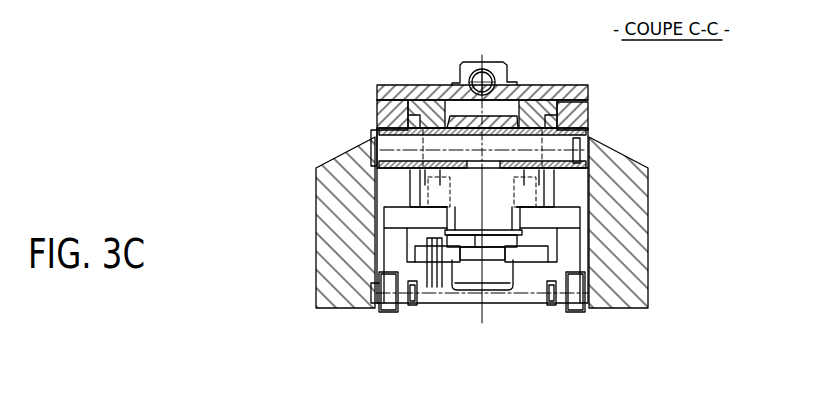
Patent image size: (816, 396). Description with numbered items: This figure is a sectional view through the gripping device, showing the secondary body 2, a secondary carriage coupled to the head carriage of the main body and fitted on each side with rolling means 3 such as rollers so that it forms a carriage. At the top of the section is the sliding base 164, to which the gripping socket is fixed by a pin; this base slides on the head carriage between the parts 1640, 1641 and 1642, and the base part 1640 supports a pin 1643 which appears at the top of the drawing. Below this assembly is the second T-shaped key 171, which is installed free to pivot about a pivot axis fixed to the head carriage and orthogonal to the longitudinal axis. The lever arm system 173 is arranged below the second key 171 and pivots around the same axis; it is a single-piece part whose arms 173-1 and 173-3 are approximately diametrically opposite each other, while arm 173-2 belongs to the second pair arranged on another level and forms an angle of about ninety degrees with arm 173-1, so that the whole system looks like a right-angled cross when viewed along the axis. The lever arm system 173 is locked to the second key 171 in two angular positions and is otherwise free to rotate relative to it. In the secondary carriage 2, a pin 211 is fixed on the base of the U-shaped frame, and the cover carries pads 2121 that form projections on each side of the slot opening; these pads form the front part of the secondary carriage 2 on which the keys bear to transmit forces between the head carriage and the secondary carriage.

The secondary body 2 is at (568, 240).
The rolling means 3 is at (578, 305).
The base 164 is at (415, 110).
The second T-shaped key 171 is at (462, 190).
The lever arm system 173 is at (463, 295).
The arm 173-1 is at (420, 252).
The arm 173-2 is at (505, 290).
The arm 173-3 is at (543, 253).
The pin 211 is at (433, 290).
The base part 1640 is at (376, 92).
The part 1641 is at (377, 117).
The part 1642 is at (588, 107).
The pin 1643 is at (477, 72).
The pads 2121 is at (548, 192).